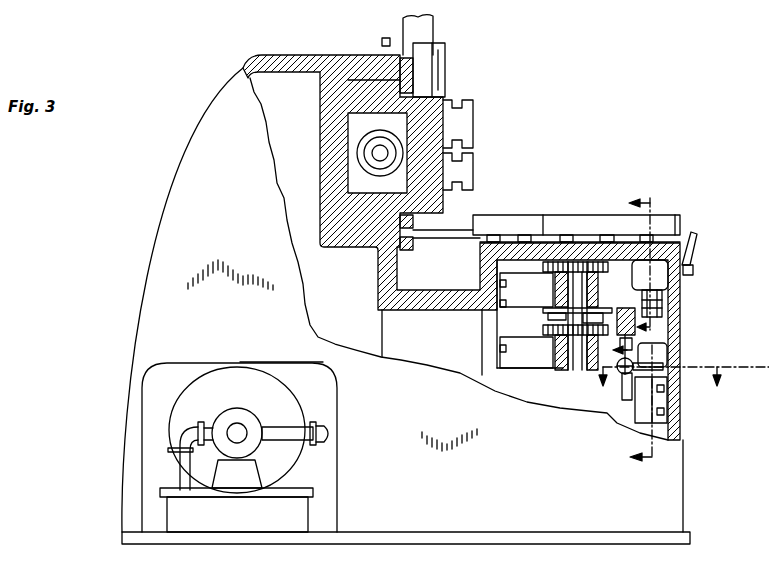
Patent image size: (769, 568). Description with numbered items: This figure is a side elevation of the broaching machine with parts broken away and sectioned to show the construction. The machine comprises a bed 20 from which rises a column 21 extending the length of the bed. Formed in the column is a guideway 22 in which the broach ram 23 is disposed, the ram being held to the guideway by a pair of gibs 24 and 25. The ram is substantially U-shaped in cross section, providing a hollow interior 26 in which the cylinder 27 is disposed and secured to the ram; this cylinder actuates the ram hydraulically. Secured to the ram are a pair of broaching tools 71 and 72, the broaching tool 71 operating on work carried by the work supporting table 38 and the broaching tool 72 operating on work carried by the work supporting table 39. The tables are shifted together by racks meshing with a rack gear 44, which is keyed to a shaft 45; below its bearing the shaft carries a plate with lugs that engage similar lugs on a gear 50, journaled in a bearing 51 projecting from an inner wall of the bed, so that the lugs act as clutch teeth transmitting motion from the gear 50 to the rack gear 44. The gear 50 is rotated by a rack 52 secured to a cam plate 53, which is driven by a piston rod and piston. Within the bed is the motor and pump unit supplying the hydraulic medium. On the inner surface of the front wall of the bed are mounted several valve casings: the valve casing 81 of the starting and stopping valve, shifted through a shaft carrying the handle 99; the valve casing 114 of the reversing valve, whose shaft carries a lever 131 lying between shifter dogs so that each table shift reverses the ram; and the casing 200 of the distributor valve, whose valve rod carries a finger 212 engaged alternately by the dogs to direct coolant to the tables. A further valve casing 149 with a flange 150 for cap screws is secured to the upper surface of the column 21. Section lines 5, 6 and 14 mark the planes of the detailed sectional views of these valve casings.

The section line 5- 5 is at (648, 268).
The section line 6- 6 is at (634, 405).
The section line 14- 14 is at (681, 386).
The bed 20 is at (686, 510).
The column 21 is at (219, 90).
The guideway 22 is at (340, 80).
The broach ram 23 is at (357, 80).
The gib 24 is at (410, 72).
The gib 25 is at (413, 222).
The hollow interior 26 is at (352, 118).
The cylinder 27 is at (357, 153).
The work supporting table 38 is at (560, 222).
The work supporting table 39 is at (290, 556).
The rack gear 44 is at (487, 278).
The shaft 45 is at (578, 290).
The gear 50 is at (543, 328).
The bearing 51 is at (557, 368).
The rack 52 is at (620, 308).
The cam plate 53 is at (640, 342).
The broaching tool 71 is at (470, 125).
The broaching tool 72 is at (470, 180).
The valve casing 81 is at (657, 285).
The handle 99 is at (697, 256).
The valve casing 114 is at (689, 400).
The lever 131 is at (612, 390).
The valve casing 149 is at (427, 31).
The flange 150 is at (388, 50).
The casing 200 is at (662, 356).
The finger 212 is at (665, 362).